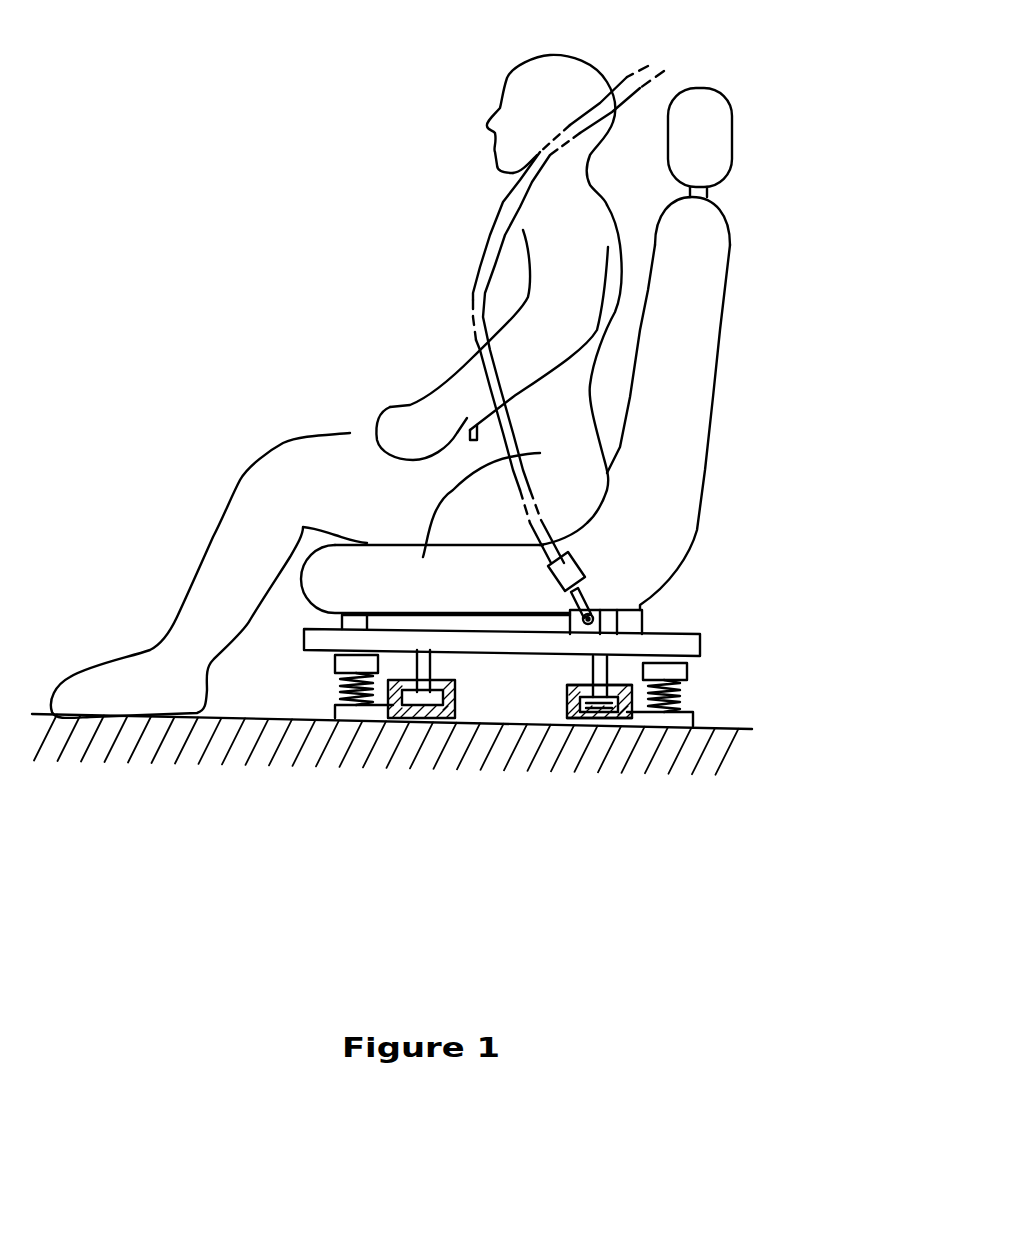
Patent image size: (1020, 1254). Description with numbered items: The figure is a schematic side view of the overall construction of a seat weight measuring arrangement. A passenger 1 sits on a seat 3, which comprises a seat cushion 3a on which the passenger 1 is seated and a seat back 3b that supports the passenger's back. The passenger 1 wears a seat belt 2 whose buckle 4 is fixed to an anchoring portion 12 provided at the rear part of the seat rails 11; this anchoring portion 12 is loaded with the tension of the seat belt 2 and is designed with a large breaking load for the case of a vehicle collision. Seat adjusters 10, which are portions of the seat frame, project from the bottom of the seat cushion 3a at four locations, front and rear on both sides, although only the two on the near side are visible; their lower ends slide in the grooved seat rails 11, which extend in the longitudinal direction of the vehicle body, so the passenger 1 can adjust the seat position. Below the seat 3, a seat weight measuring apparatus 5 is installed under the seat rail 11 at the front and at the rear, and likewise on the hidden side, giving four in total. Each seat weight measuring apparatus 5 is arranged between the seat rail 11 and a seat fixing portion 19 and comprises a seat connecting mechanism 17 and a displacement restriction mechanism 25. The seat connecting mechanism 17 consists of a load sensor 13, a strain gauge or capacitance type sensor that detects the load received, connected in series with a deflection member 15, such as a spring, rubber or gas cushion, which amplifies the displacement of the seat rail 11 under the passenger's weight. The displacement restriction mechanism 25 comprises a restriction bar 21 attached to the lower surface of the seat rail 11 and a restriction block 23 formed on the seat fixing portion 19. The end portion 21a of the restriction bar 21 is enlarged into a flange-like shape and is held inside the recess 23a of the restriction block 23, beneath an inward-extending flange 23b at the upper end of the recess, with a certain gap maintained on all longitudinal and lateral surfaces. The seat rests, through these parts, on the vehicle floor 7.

The passenger 1 is at (490, 297).
The seat belt 2 is at (537, 155).
The seat 3 is at (546, 350).
The seat cushion 3a is at (540, 453).
The seat back 3b is at (708, 393).
The buckle 4 is at (560, 590).
The seat weight measuring apparatus 5 is at (573, 702).
The vehicle floor 7 is at (745, 727).
The seat adjusters 10 is at (643, 607).
The seat rails 11 is at (690, 645).
The anchoring portion 12 is at (568, 617).
The load sensor 13 is at (677, 668).
The deflection member 15 is at (680, 693).
The seat connecting mechanism 17 is at (741, 669).
The seat fixing portions 19 is at (683, 717).
The restriction bar 21 is at (604, 747).
The end portion 21a is at (608, 720).
The restriction block 23 is at (624, 715).
The recess 23a is at (590, 720).
The flange 23b is at (622, 680).
The displacement restriction mechanism 25 is at (598, 715).